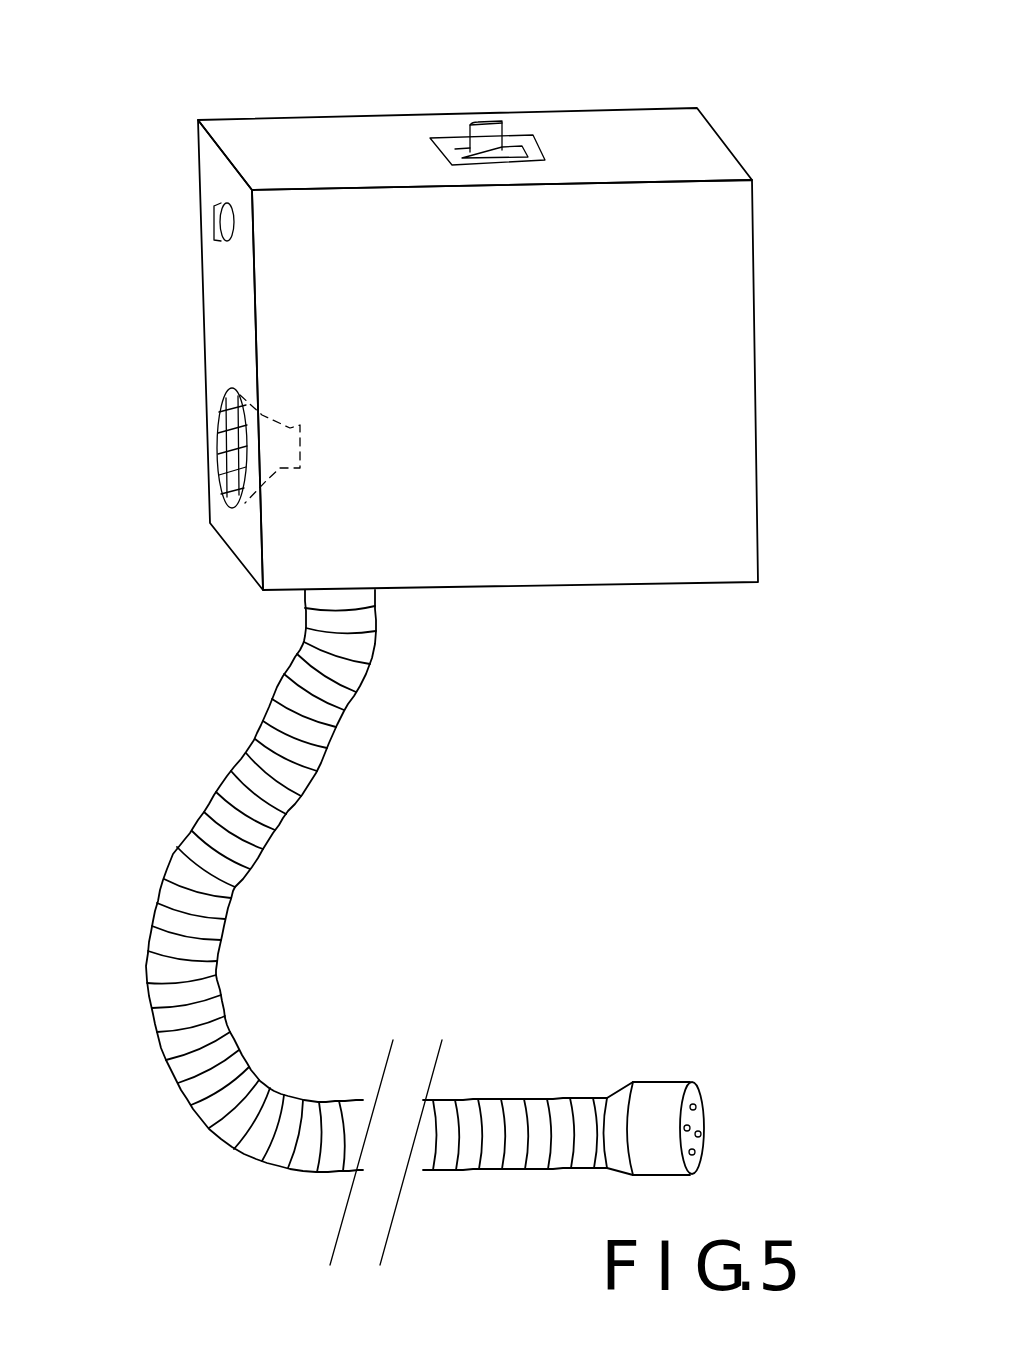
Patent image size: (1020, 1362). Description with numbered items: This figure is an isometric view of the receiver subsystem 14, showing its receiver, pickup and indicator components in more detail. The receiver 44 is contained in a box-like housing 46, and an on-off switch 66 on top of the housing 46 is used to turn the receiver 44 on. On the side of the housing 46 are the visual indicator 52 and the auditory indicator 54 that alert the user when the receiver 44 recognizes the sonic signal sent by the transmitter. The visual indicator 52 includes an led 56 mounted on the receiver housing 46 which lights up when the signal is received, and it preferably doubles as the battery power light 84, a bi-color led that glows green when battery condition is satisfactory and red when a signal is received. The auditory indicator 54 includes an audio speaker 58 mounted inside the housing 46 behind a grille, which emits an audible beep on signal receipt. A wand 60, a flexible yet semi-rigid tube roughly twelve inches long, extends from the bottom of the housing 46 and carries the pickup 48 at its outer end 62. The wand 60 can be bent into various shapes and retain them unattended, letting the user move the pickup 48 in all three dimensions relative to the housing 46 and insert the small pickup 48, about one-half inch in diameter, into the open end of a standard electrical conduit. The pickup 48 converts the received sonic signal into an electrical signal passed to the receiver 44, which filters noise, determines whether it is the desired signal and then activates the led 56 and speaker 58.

The receiver subsystem 14 is at (162, 103).
The receiver 44 is at (750, 140).
The housing 46 is at (756, 266).
The pickup 48 is at (674, 1081).
The visual indicator 52 is at (207, 226).
The auditory indicator 54 is at (209, 469).
The led 56 is at (214, 206).
The audio speaker 58 is at (236, 486).
The wand 60 is at (320, 768).
The outer end 62 is at (607, 1094).
The on-off switch 66 is at (500, 122).
The battery power light 84 is at (213, 215).